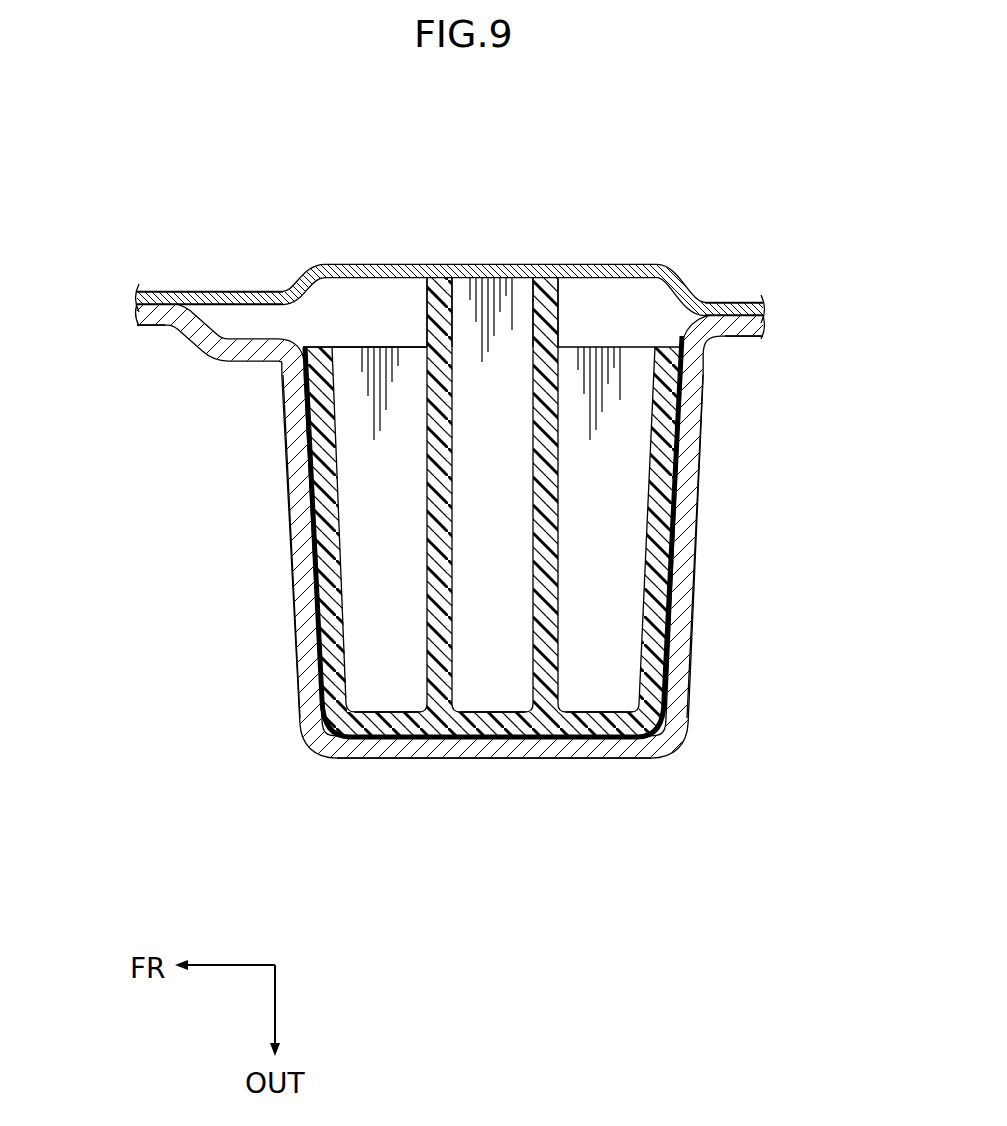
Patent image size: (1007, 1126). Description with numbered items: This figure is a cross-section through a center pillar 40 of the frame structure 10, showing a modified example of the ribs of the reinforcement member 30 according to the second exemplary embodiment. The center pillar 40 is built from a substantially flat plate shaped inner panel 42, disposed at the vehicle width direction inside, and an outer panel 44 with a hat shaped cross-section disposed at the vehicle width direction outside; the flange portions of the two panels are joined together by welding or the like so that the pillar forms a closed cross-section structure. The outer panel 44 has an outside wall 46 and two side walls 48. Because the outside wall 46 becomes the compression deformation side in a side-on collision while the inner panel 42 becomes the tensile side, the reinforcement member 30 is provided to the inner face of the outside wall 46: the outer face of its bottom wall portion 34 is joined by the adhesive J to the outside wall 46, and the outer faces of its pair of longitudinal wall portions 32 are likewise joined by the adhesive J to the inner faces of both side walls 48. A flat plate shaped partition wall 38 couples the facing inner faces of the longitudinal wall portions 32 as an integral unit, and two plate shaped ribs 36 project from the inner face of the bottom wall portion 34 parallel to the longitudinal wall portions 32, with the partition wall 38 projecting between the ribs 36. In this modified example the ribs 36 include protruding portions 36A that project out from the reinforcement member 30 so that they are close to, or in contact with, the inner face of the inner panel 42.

The frame structure 10 is at (477, 501).
The reinforcement member 30 is at (612, 334).
The longitudinal wall portions 32 is at (496, 507).
The bottom wall portion 34 is at (486, 724).
The ribs 36 is at (428, 498).
The protruding portions 36A is at (425, 283).
The partition wall 38 is at (350, 368).
The center pillar 40 is at (477, 580).
The inner panel 42 is at (457, 221).
The outer panel 44 is at (477, 592).
The outside wall 46 is at (386, 759).
The side walls 48 is at (286, 497).
The adhesive J is at (318, 630).